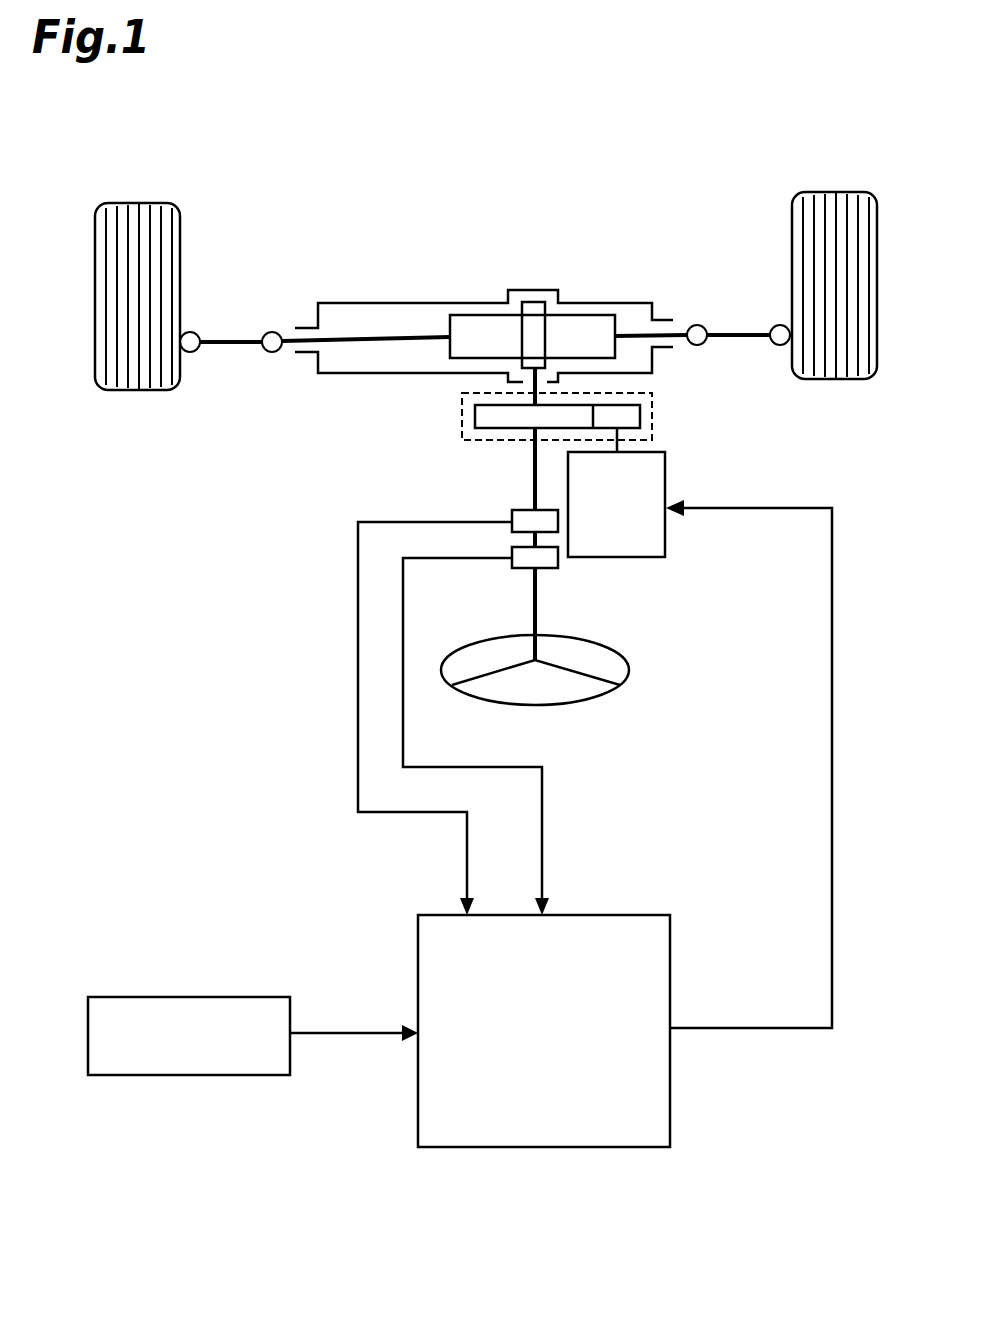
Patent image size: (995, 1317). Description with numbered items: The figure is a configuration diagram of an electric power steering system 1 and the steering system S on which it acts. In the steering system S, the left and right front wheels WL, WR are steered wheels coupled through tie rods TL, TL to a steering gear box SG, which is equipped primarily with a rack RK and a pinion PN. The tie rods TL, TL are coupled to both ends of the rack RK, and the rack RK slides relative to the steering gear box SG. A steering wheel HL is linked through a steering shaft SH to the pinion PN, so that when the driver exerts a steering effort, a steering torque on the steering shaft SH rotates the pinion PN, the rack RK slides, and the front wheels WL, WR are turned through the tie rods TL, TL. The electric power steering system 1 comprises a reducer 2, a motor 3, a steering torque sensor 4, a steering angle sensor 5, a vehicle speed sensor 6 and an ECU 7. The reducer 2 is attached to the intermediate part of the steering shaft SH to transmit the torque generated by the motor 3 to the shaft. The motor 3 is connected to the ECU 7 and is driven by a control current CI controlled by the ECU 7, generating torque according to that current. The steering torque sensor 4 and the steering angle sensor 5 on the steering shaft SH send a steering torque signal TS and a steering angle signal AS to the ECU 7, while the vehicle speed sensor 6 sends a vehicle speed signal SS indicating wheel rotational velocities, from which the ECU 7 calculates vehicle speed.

The electric power steering system 1 is at (160, 676).
The steering system S is at (608, 156).
The left front wheel WL is at (180, 227).
The right front wheel WR is at (792, 218).
The tie rod TL is at (232, 350).
The steering gear box SG is at (373, 303).
The rack RK is at (466, 314).
The pinion PN is at (545, 330).
The steering shaft SH is at (533, 592).
The reducer 2 is at (655, 412).
The motor 3 is at (655, 558).
The steering angle sensor 5 is at (512, 511).
The steering torque sensor 4 is at (558, 568).
The steering wheel HL is at (629, 668).
The steering angle signal AS is at (435, 705).
The steering torque signal TS is at (476, 724).
The control current CI is at (749, 764).
The vehicle speed signal SS is at (354, 1021).
The ECU 7 is at (670, 952).
The vehicle speed sensor 6 is at (160, 997).